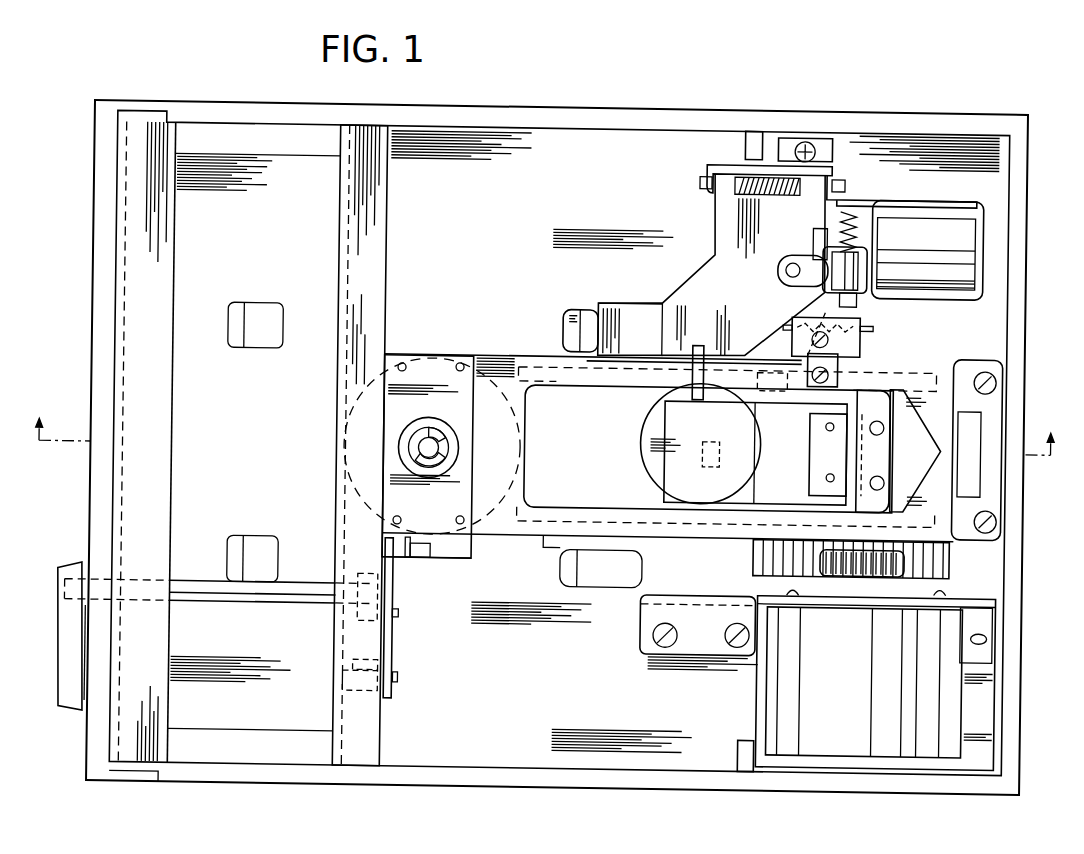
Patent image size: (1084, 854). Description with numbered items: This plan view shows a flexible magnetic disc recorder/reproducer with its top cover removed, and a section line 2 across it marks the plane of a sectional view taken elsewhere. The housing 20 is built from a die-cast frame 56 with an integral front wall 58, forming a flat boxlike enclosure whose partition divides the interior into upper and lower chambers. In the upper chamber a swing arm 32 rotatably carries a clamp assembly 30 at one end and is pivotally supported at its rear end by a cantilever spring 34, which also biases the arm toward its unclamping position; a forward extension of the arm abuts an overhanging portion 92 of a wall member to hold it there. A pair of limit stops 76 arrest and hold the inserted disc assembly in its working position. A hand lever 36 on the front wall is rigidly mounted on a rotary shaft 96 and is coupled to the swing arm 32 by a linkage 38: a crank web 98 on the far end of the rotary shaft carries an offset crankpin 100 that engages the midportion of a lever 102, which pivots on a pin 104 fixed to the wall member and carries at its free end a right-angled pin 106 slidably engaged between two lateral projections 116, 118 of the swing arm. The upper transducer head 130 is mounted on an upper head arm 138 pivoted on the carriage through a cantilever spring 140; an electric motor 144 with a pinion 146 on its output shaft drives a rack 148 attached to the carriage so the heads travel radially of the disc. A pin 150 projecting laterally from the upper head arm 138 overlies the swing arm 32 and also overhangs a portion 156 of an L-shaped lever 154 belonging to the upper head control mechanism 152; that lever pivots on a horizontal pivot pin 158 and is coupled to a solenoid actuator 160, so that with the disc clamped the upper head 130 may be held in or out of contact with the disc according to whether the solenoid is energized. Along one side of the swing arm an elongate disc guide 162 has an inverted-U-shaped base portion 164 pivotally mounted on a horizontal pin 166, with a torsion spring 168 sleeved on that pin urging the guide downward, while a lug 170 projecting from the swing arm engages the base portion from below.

The section line 2- 2 is at (550, 423).
The housing 20 is at (947, 100).
The clamp assembly 30 is at (393, 347).
The swing arm 32 is at (495, 345).
The cantilever spring 34 is at (1001, 400).
The hand lever 36 is at (69, 658).
The linkage 38 is at (312, 578).
The frame 56 is at (828, 106).
The front wall 58 is at (100, 165).
The limit stops 76 is at (745, 136).
The overhanging portion 92 is at (389, 196).
The rotary shaft 96 is at (196, 578).
The crank web 98 is at (366, 569).
The crankpin 100 is at (405, 608).
The lever 102 is at (399, 642).
The pin 104 is at (405, 677).
The pin 106 is at (438, 543).
The lateral projection 116 is at (414, 553).
The lateral projection 118 is at (446, 552).
The upper transducer head 130 is at (698, 441).
The upper head arm 138 is at (649, 421).
The cantilever spring 140 is at (888, 438).
The electric motor 144 is at (932, 740).
The pinion 146 is at (909, 554).
The rack 148 is at (759, 555).
The pin 150 is at (704, 340).
The upper head control mechanism 152 is at (693, 178).
The L-shaped lever 154 is at (717, 220).
The portion 156 is at (643, 303).
The pivot pin 158 is at (841, 174).
The solenoid actuator 160 is at (917, 207).
The disc guide 162 is at (591, 350).
The base portion 164 is at (878, 336).
The pin 166 is at (876, 315).
The torsion spring 168 is at (870, 300).
The lug 170 is at (810, 347).